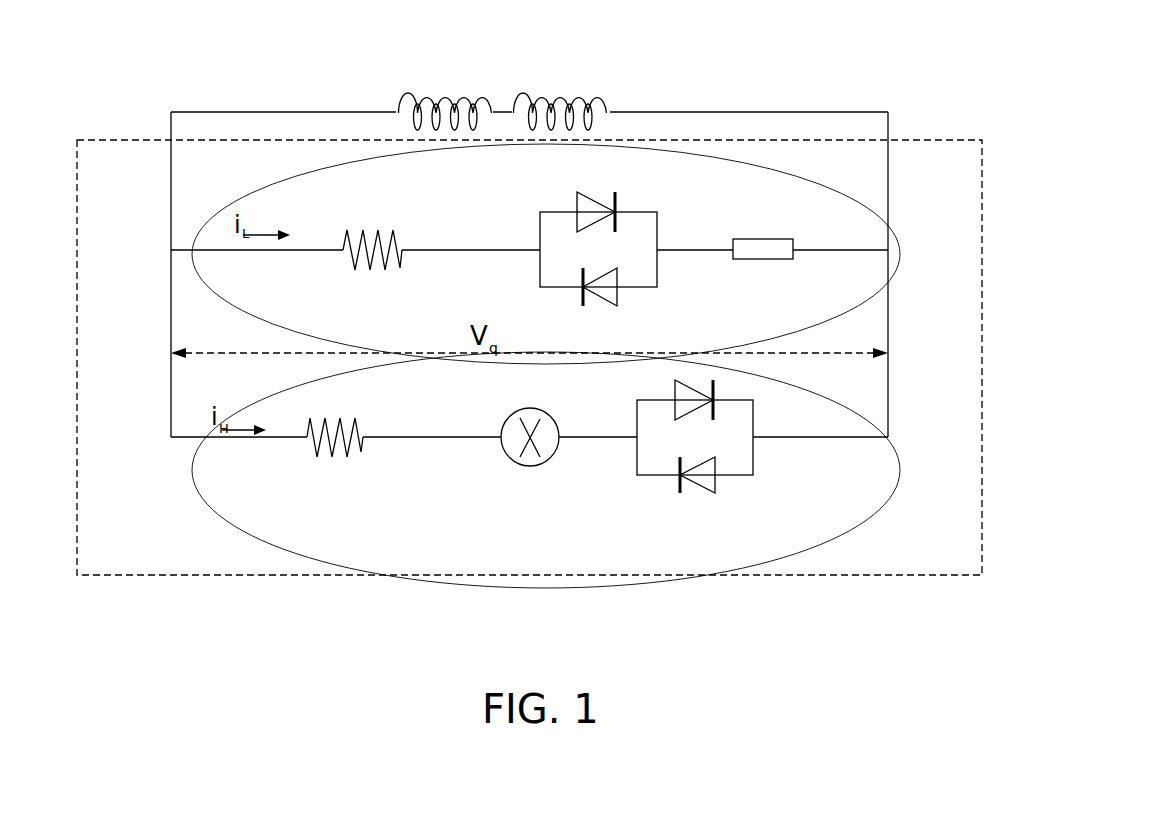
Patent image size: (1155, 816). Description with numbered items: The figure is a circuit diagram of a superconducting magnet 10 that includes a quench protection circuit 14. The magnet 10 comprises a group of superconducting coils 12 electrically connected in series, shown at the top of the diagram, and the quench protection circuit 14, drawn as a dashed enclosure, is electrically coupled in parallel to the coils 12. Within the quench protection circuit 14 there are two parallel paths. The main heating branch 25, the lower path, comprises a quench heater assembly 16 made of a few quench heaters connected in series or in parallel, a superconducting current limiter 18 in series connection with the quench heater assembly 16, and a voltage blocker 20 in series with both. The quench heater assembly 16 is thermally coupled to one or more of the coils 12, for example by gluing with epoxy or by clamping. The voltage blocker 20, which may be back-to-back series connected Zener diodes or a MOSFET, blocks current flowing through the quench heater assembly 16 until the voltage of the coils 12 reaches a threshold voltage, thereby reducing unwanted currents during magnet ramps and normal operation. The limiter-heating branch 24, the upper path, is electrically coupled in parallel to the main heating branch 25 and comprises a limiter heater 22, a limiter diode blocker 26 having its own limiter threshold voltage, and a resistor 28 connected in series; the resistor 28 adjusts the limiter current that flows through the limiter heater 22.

The superconducting magnet 10 is at (1040, 285).
The superconducting coil 12 is at (557, 97).
The quench protection circuit 14 is at (267, 575).
The quench heater assembly 16 is at (325, 450).
The superconducting current limiter 18 is at (523, 458).
The voltage blocker 20 is at (748, 470).
The limiter heater 22 is at (372, 262).
The limiter-heating branch 24 is at (747, 163).
The main heating branch 25 is at (893, 492).
The limiter diode blocker 26 is at (548, 235).
The resistor 28 is at (758, 247).